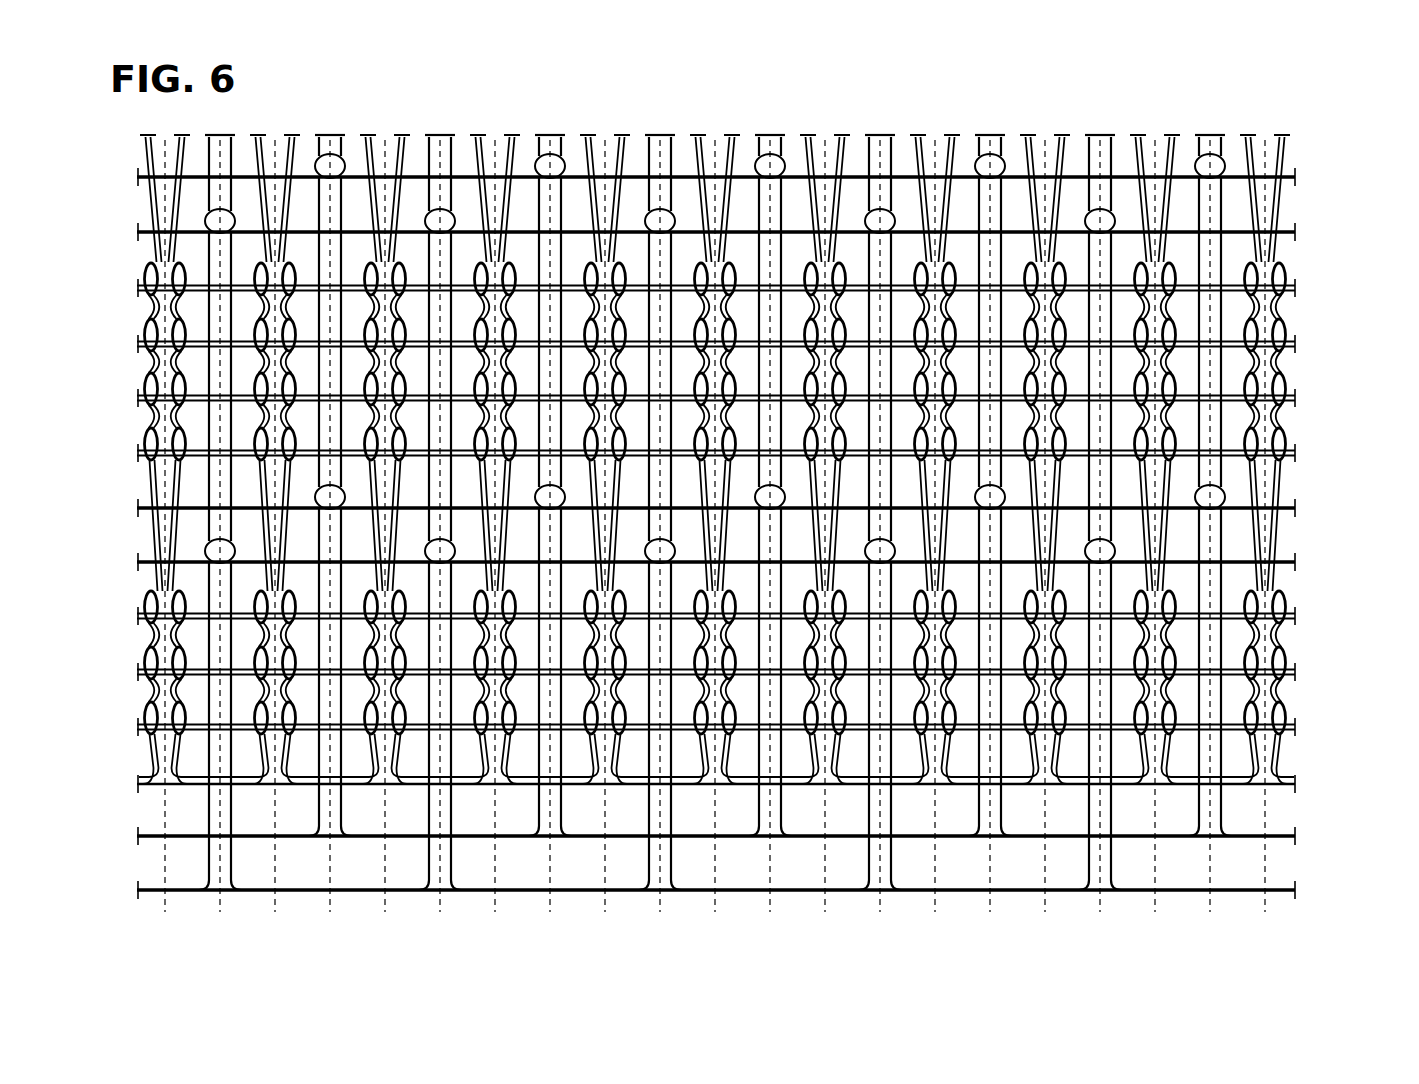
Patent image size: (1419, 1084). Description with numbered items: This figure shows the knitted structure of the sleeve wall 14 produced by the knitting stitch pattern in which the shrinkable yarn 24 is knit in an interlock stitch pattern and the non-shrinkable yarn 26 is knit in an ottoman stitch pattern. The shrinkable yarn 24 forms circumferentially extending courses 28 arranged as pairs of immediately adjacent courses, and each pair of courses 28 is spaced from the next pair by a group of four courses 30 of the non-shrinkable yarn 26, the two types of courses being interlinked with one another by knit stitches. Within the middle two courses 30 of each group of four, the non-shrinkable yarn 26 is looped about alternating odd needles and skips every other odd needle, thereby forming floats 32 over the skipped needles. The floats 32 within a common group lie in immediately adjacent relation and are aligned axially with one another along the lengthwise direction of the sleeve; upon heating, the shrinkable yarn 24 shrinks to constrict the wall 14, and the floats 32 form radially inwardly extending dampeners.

The knitted wall 14 is at (1277, 137).
The shrinkable yarn 24 is at (1294, 174).
The non-shrinkable yarn 26 is at (1292, 291).
The knit courses of shrinkable yarn 28 is at (1355, 150).
The knit courses of non-shrinkable yarn 30 is at (1355, 270).
The floats 32 is at (348, 385).